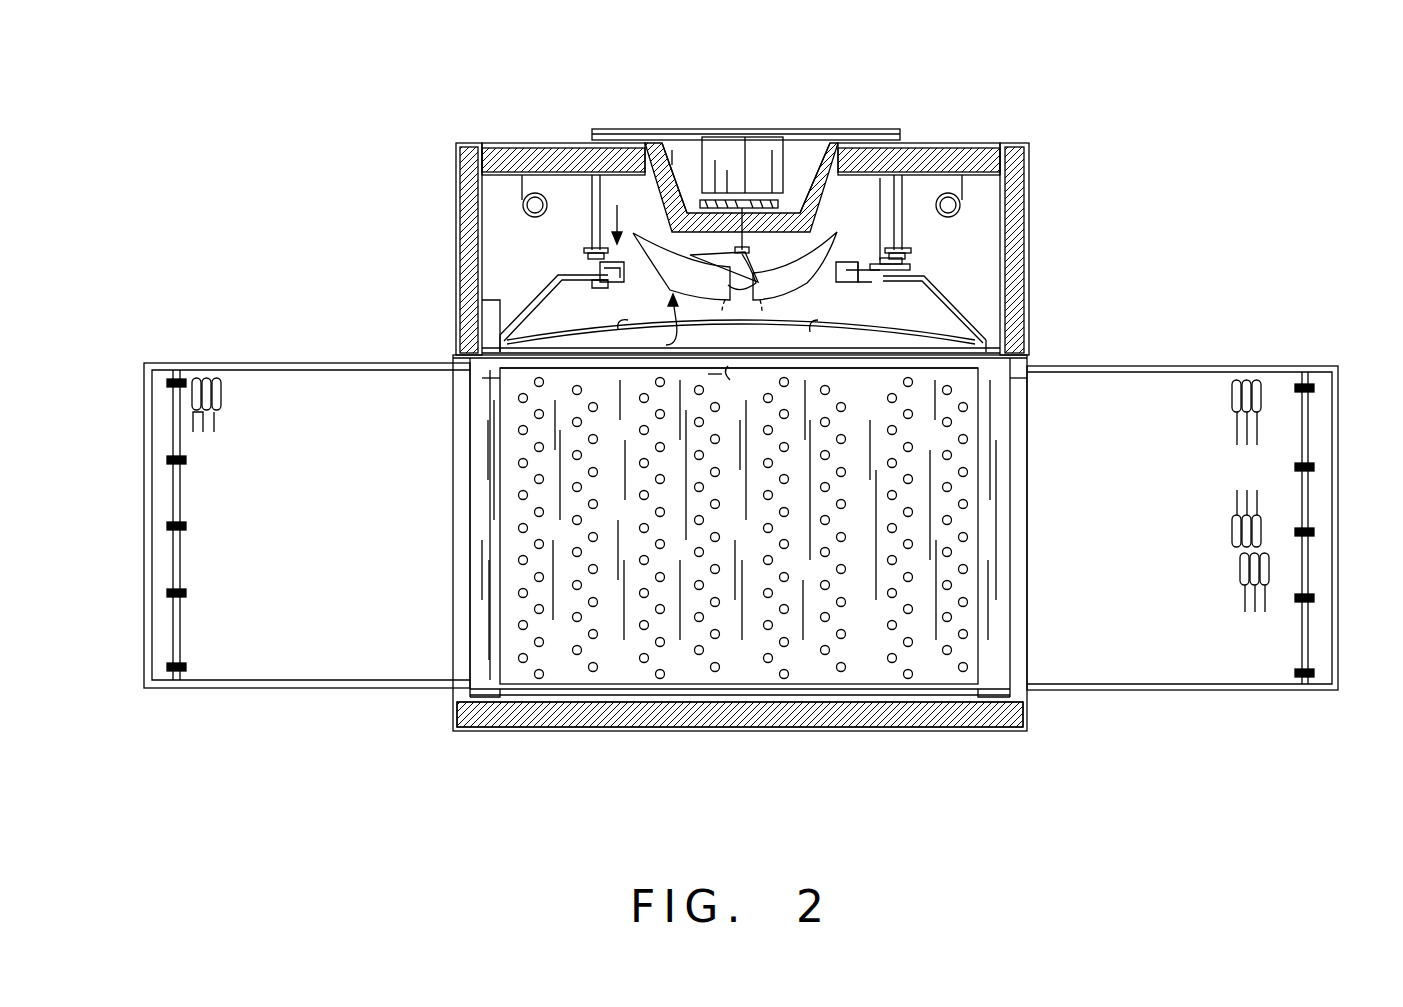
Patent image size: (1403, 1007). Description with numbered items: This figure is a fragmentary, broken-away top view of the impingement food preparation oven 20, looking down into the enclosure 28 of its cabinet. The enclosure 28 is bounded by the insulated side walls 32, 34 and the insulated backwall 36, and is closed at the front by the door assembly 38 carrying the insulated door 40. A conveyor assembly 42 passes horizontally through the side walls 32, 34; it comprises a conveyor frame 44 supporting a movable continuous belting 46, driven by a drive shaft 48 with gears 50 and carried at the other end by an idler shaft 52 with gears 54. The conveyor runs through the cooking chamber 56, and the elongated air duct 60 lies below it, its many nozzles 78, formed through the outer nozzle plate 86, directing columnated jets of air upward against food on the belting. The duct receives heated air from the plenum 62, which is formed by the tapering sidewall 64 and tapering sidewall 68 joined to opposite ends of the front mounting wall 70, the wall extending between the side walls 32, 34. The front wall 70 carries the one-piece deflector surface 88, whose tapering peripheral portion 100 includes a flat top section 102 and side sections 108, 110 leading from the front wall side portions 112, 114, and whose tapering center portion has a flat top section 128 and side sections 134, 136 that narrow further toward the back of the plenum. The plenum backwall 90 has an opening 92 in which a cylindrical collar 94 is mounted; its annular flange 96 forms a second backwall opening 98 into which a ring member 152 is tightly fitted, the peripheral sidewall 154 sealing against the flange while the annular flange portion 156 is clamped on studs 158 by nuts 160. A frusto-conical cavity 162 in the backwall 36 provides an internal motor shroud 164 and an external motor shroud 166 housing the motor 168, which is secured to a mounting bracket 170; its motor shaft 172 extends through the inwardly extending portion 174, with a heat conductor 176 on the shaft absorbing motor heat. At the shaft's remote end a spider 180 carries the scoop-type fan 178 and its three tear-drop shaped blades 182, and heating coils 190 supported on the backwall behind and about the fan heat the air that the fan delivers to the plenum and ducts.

The impingement food preparation oven 20 is at (1152, 230).
The enclosure 28 is at (1030, 348).
The insulated side wall 32 is at (456, 250).
The insulated side wall 34 is at (1030, 216).
The insulated backwall 36 is at (960, 142).
The door assembly 38 is at (506, 740).
The insulated door 40 is at (806, 732).
The conveyor assembly 42 is at (188, 340).
The conveyor frame 44 is at (276, 363).
The continuous belting 46 is at (224, 422).
The drive shaft 48 is at (1302, 438).
The gears 50 is at (1314, 468).
The idler shaft 52 is at (183, 572).
The gears 54 is at (167, 462).
The cooking chamber 56 is at (500, 568).
The elongated air duct 60 is at (978, 522).
The plenum 62 is at (540, 310).
The tapering sidewall 64 is at (962, 312).
The tapering sidewall 68 is at (548, 270).
The front mounting wall 70 is at (840, 352).
The nozzles 78 is at (658, 430).
The outer nozzle plate 86 is at (727, 410).
The deflector surface 88 is at (860, 322).
The backwall 90 is at (574, 272).
The opening 92 is at (592, 286).
The cylindrical collar 94 is at (615, 213).
The annular flange 96 is at (880, 228).
The second backwall opening 98 is at (858, 270).
The tapering peripheral portion 100 is at (498, 396).
The flat top section 102 is at (598, 368).
The side section 108 is at (470, 310).
The side section 110 is at (944, 332).
The front wall side portion 112 is at (482, 384).
The front wall side portion 114 is at (1030, 380).
The flat top section 128 is at (730, 382).
The side section 134 is at (639, 304).
The side section 136 is at (830, 309).
The ring member 152 is at (668, 160).
The peripheral sidewall 154 is at (806, 262).
The annular flange portion 156 is at (896, 248).
The studs 158 is at (592, 210).
The nuts 160 is at (898, 264).
The cavity 162 is at (806, 118).
The internal motor shroud 164 is at (672, 200).
The external motor shroud 166 is at (698, 172).
The motor 168 is at (752, 130).
The mounting bracket 170 is at (886, 128).
The motor shaft 172 is at (812, 165).
The inwardly extending portion 174 is at (690, 178).
The heat conductor 176 is at (746, 210).
The scoop-type fan 178 is at (652, 321).
The spider 180 is at (730, 262).
The blades 182 is at (763, 314).
The heating coils 190 is at (523, 205).